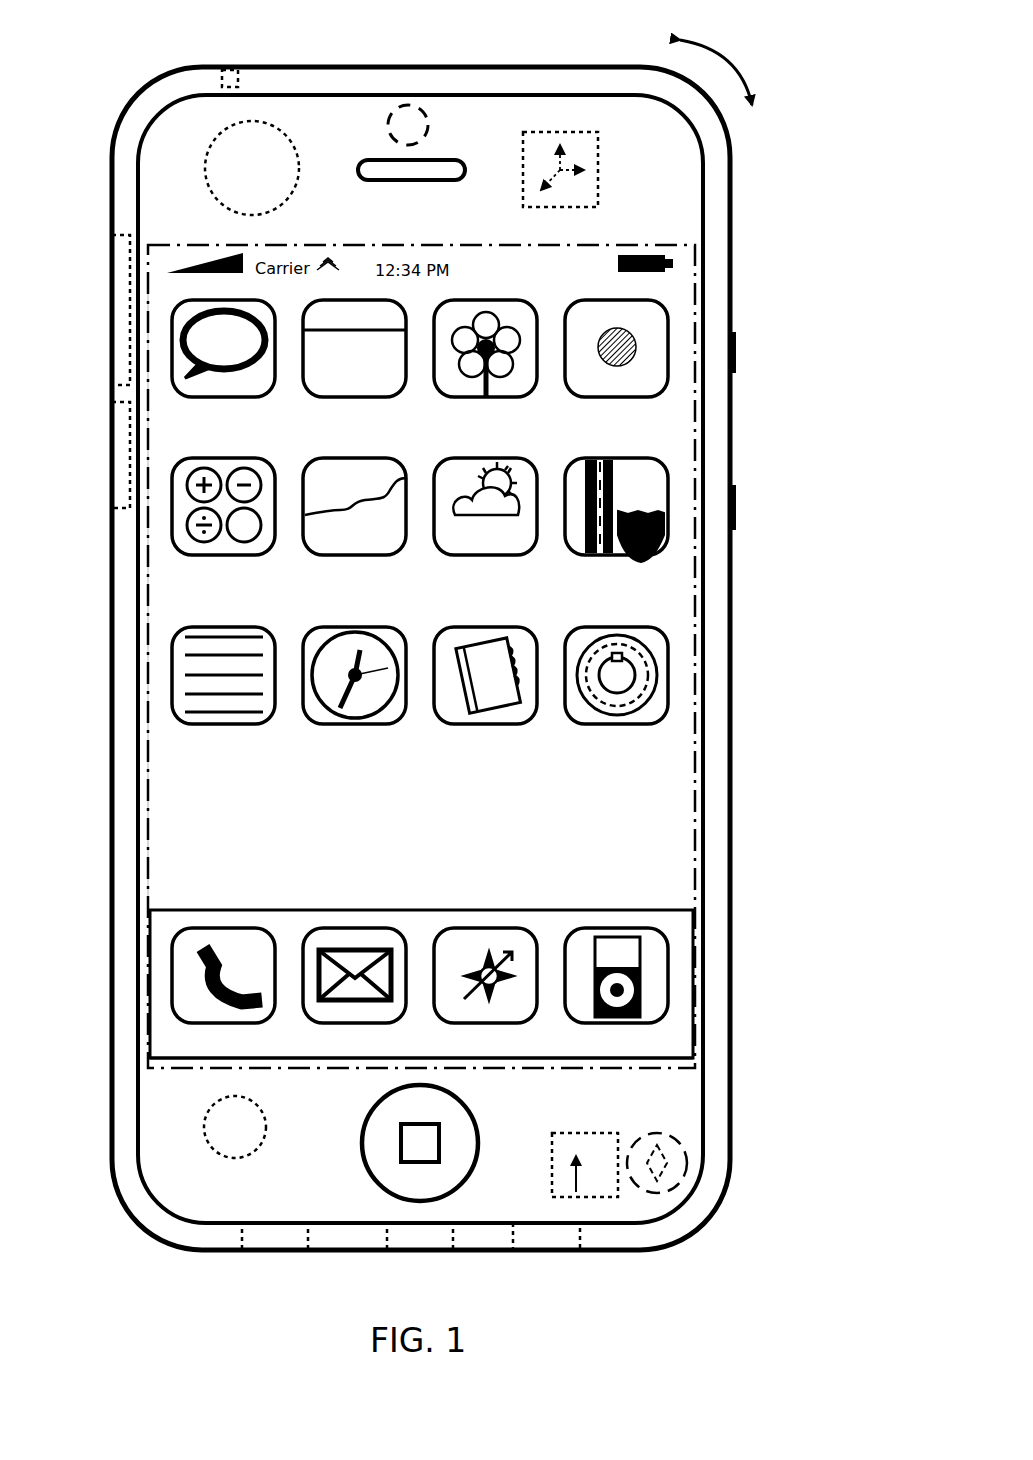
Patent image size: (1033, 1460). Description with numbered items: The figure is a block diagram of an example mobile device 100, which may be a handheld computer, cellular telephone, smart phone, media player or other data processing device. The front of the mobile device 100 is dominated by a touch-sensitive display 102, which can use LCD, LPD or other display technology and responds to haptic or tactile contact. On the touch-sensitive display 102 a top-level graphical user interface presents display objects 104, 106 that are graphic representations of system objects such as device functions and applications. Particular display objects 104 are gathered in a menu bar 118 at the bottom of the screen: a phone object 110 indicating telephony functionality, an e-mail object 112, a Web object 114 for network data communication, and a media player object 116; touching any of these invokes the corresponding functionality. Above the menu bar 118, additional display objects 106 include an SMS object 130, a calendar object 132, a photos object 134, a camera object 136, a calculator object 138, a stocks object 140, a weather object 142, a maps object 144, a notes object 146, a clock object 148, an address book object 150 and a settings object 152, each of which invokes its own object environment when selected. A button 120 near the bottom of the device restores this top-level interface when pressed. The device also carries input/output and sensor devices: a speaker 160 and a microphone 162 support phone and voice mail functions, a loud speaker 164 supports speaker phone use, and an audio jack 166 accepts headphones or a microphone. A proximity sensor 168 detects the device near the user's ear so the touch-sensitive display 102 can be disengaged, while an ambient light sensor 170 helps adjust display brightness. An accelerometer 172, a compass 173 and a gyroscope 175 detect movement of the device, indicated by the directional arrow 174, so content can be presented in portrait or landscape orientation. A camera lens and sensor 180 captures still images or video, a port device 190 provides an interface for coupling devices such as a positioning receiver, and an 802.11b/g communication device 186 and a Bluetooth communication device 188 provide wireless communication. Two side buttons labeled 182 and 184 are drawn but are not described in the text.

The mobile device 100 is at (505, 67).
The touch-sensitive display 102 is at (625, 245).
The display objects 104 is at (682, 926).
The display objects 106 is at (682, 295).
The phone object 110 is at (225, 928).
The e-mail object 112 is at (356, 928).
The Web object 114 is at (488, 928).
The media player object 116 is at (620, 928).
The menu bar 118 is at (572, 1060).
The button 120 is at (478, 1142).
The SMS object 130 is at (268, 397).
The calendar object 132 is at (399, 397).
The photos object 134 is at (530, 397).
The camera object 136 is at (661, 397).
The calculator object 138 is at (268, 555).
The stocks object 140 is at (399, 555).
The weather object 142 is at (530, 555).
The maps object 144 is at (661, 555).
The notes object 146 is at (268, 724).
The clock object 148 is at (399, 724).
The address book object 150 is at (530, 724).
The settings object 152 is at (661, 724).
The speaker 160 is at (385, 180).
The microphone 162 is at (308, 1235).
The loud speaker 164 is at (580, 1235).
The audio jack 166 is at (238, 76).
The proximity sensor 168 is at (208, 180).
The ambient light sensor 170 is at (258, 1148).
The accelerometer 172 is at (598, 175).
The compass 173 is at (552, 1166).
The directional arrow 174 is at (742, 72).
The gyroscope 175 is at (677, 1140).
The camera lens and sensor 180 is at (428, 118).
The volume button 182 is at (736, 352).
The volume button 184 is at (736, 505).
The 802.11b/g communication device 186 is at (116, 235).
The Bluetooth communication device 188 is at (116, 403).
The port device 190 is at (453, 1237).